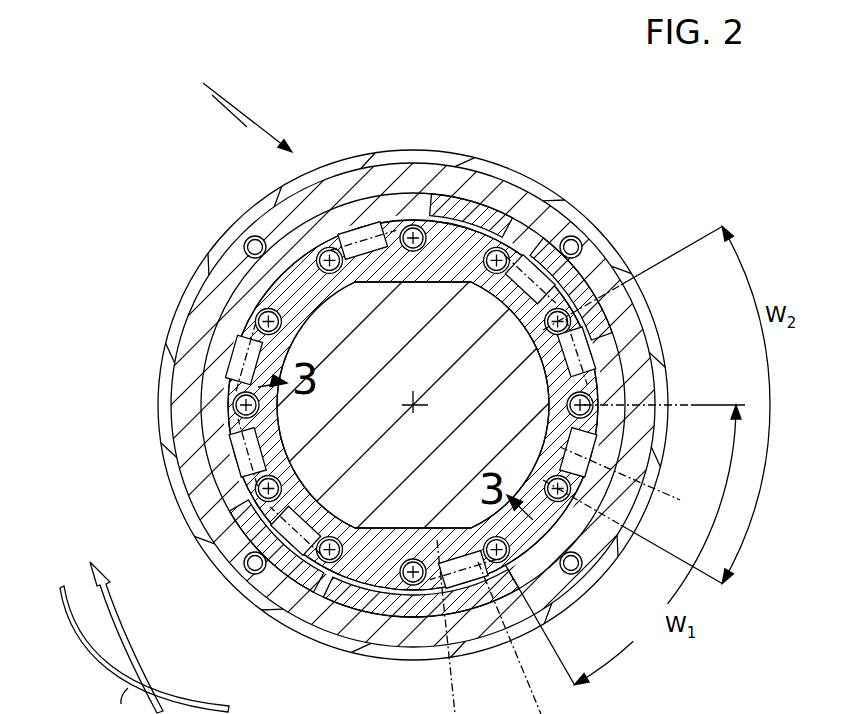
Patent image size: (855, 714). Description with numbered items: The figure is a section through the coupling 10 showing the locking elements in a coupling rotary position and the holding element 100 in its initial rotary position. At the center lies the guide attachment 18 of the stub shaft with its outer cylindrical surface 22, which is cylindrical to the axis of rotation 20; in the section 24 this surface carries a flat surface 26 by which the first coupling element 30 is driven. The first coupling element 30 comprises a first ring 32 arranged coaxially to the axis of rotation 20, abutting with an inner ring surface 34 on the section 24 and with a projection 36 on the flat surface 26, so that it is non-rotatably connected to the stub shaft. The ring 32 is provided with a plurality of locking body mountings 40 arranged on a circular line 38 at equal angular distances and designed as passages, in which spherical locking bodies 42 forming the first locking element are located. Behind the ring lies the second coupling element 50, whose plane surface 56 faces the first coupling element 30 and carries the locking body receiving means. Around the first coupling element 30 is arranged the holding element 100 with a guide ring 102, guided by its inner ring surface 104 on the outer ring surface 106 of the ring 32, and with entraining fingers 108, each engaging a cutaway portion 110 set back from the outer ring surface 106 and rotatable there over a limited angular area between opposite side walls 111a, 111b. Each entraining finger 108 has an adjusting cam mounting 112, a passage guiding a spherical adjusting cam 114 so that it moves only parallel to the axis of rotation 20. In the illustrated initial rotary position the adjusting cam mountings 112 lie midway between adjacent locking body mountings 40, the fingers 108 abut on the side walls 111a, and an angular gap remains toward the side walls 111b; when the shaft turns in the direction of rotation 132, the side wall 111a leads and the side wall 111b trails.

The coupling 10 is at (227, 105).
The guide attachment 18 is at (368, 330).
The axis of rotation 20 is at (416, 404).
The outer cylindrical surface 22 is at (630, 347).
The section 24 is at (664, 383).
The flat surface 26 is at (367, 235).
The first coupling element 30 is at (549, 221).
The first ring 32 is at (470, 198).
The inner ring surface 34 is at (583, 262).
The projection 36 is at (353, 248).
The circular line 38 is at (600, 452).
The locking body mounting 40 is at (313, 600).
The locking body 42 is at (310, 575).
The second coupling element 50 is at (370, 638).
The plane surface 56 is at (425, 636).
The holding element 100 is at (187, 440).
The guide ring 102 is at (208, 410).
The inner ring surface 104 is at (237, 320).
The outer ring surface 106 is at (223, 457).
The entraining finger 108 is at (241, 302).
The cutaway portion 110 is at (233, 350).
The side wall 111a is at (268, 293).
The side wall 111b is at (237, 383).
The adjusting cam mounting 112 is at (415, 226).
The adjusting cam 114 is at (473, 220).
The direction of rotation 132 is at (118, 610).